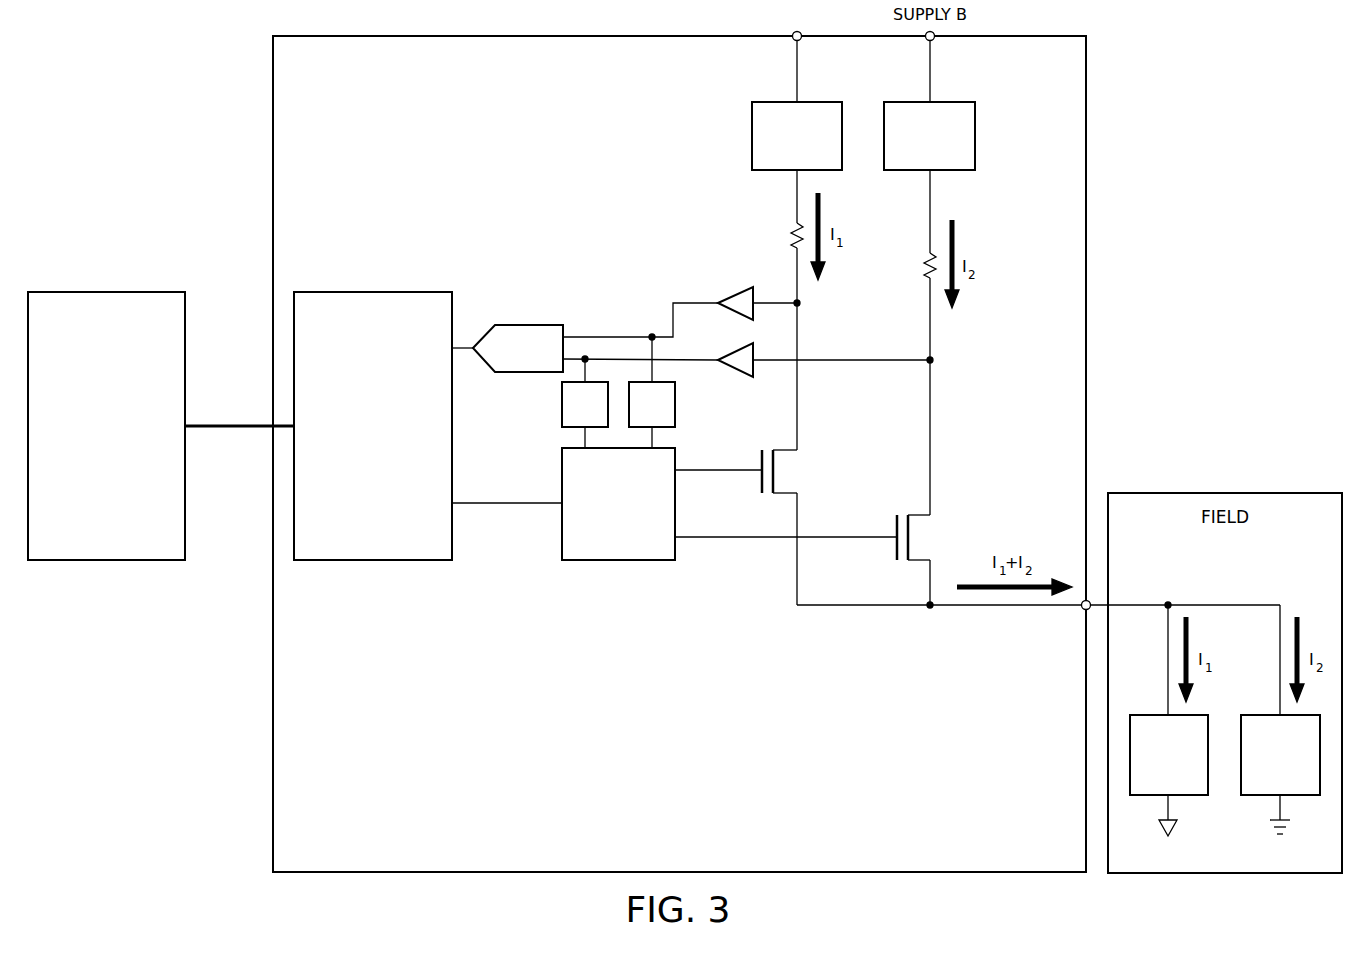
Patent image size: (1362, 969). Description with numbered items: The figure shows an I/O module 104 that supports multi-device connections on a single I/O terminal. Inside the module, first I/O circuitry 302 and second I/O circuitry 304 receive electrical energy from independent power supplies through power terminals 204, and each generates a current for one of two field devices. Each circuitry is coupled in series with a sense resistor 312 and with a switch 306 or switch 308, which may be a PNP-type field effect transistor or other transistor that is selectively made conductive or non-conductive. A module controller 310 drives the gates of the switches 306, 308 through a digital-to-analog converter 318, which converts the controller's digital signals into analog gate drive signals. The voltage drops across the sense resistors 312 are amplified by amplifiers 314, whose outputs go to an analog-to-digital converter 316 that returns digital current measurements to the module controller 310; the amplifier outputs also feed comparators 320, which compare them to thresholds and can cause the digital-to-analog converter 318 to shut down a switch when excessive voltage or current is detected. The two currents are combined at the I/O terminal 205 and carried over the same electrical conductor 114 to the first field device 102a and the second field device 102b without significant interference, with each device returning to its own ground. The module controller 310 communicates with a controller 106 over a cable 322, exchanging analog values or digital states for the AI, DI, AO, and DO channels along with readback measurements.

The I/O module 104 is at (271, 103).
The controller 106 is at (86, 457).
The cable 322 is at (240, 424).
The module controller 310 is at (353, 470).
The analog-to-digital converter 316 is at (522, 325).
The amplifiers 314 is at (736, 290).
The comparators 320 is at (676, 404).
The digital-to-analog converter 318 is at (597, 532).
The power terminals 204 is at (804, 42).
The first I/O circuitry 302 is at (752, 138).
The second I/O circuitry 304 is at (975, 138).
The sense resistor 312 is at (794, 236).
The switch 306 is at (762, 482).
The switch 308 is at (896, 552).
The I/O terminal 205 is at (1080, 610).
The electrical conductor 114 is at (1224, 605).
The first field device 102a is at (1145, 767).
The second field device 102b is at (1256, 767).